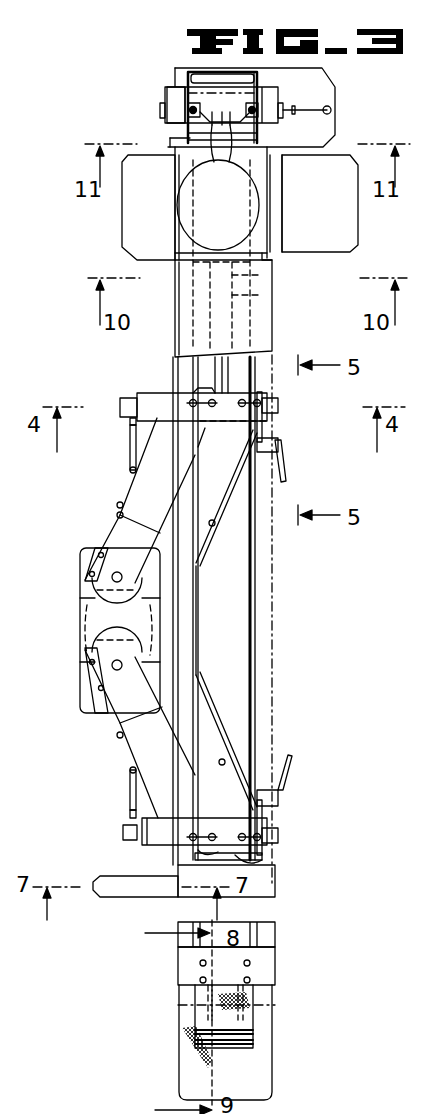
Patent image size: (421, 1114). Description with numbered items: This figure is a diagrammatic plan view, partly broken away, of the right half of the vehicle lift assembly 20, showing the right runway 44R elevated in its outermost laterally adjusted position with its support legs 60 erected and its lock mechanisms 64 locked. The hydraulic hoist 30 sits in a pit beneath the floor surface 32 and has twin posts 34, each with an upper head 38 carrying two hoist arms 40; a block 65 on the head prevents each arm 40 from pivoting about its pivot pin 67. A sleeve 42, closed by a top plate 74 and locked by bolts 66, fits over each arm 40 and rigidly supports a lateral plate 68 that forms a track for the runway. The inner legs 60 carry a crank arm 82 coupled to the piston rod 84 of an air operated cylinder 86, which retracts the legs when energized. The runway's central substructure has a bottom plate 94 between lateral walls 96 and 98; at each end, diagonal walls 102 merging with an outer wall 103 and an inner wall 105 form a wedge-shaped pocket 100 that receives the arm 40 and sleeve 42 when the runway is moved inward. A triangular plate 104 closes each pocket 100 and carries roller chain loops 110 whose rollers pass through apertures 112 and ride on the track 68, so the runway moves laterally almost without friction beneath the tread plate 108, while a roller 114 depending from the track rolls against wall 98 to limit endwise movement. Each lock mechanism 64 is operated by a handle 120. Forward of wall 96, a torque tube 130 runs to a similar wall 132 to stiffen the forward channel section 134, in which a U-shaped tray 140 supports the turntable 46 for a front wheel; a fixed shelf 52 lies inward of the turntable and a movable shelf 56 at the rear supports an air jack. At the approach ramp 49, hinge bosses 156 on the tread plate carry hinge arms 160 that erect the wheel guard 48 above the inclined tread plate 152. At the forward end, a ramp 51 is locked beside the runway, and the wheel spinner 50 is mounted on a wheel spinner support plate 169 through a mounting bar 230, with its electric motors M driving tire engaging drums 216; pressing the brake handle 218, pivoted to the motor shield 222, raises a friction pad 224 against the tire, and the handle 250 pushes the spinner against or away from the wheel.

The vehicle lift assembly 20 is at (376, 950).
The hydraulic hoist 30 is at (88, 638).
The floor surface 32 is at (269, 620).
The hoist post 34 is at (78, 597).
The post head 38 is at (83, 622).
The hoist arm 40 is at (110, 535).
The sleeve 42 is at (100, 725).
The right runway 44R is at (286, 873).
The turntable 46 is at (221, 203).
The wheel guard 48 is at (198, 1020).
The approach ramp 49 is at (275, 1043).
The wheel spinner 50 is at (235, 115).
The ramp 51 is at (320, 203).
The fixed shelf 52 is at (132, 226).
The shelf 56 is at (138, 893).
The support leg 60 is at (122, 403).
The lock mechanism 64 is at (290, 466).
The block 65 is at (82, 557).
The bolt 66 is at (120, 503).
The pivot pin 67 is at (130, 560).
The lateral plate 68 is at (145, 395).
The top plate 74 is at (118, 512).
The crank arm 82 is at (130, 422).
The piston rod 84 is at (132, 440).
The air operated cylinder 86 is at (130, 466).
The bottom plate 94 is at (216, 551).
The lateral wall 96 is at (255, 380).
The lateral wall 98 is at (255, 860).
The wedge-shaped pocket 100 is at (214, 524).
The diagonal wall 102 is at (200, 548).
The outer wall 103 is at (252, 592).
The triangular plate 104 is at (202, 619).
The inner wall 105 is at (220, 640).
The tread plate 108 is at (223, 326).
The roller chain loop 110 is at (263, 425).
The aperture 112 is at (242, 836).
The roller 114 is at (195, 395).
The lock handle 120 is at (284, 478).
The torque tube 130 is at (268, 293).
The wall 132 is at (262, 256).
The forward channel section 134 is at (268, 273).
The U-shaped tray 140 is at (280, 178).
The inclined tread plate 152 is at (262, 1070).
The hinge boss 156 is at (230, 988).
The hinge arm 160 is at (180, 1008).
The wheel spinner support plate 169 is at (332, 87).
The tire engaging drum 216 is at (231, 128).
The brake handle 218 is at (195, 72).
The motor shield 222 is at (170, 93).
The friction pad 224 is at (178, 143).
The mounting bar 230 is at (333, 108).
The handle 250 is at (188, 72).
The electric motor M is at (167, 130).